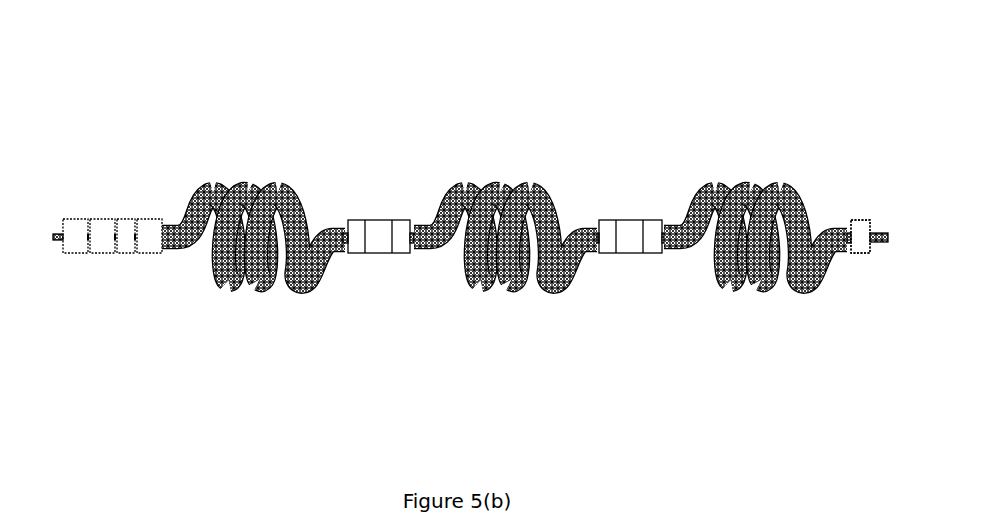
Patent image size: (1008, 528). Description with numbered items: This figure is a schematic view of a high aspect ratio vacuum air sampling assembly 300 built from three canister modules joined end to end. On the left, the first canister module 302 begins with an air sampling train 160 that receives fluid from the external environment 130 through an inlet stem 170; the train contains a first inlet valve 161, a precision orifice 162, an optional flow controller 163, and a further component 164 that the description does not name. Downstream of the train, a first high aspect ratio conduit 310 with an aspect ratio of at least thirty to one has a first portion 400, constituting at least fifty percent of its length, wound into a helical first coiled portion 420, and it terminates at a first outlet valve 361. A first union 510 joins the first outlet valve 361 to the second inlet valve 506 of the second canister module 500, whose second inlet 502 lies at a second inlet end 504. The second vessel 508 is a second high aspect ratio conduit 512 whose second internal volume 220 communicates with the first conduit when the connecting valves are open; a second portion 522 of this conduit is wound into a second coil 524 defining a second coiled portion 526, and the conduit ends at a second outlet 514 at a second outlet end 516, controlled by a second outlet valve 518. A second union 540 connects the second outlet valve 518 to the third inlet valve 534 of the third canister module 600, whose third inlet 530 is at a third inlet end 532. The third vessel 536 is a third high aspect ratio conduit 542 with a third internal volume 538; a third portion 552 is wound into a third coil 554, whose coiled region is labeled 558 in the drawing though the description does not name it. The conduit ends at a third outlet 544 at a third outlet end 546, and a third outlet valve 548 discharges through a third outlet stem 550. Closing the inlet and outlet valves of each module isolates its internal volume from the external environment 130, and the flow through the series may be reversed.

The high aspect ratio vacuum air sampling assembly 300 is at (85, 35).
The inlet stem 170 is at (56, 233).
The air sampling train 160 is at (162, 259).
The precision orifice 162 is at (77, 219).
The flow controller 163 is at (95, 219).
The first inlet valve 161 is at (123, 219).
The connector segment 164 is at (143, 219).
The first high aspect ratio conduit 310 is at (218, 240).
The first portion 400 is at (310, 150).
The first coiled portion 420 is at (183, 150).
The first canister module 302 is at (58, 358).
The external environment 130 is at (442, 124).
The first outlet valve 361 is at (360, 220).
The first union 510 is at (373, 220).
The second inlet valve 506 is at (405, 220).
The second inlet end 504 is at (439, 214).
The second inlet 502 is at (413, 253).
The second internal volume 220 is at (512, 271).
The second high aspect ratio conduit 512 is at (467, 271).
The second vessel 508 is at (501, 268).
The second coil 524 is at (552, 271).
The second portion 522 is at (512, 240).
The second coiled portion 526 is at (512, 240).
The second canister module 500 is at (402, 358).
The second outlet end 516 is at (598, 230).
The second outlet valve 518 is at (600, 220).
The second union 540 is at (623, 220).
The third inlet valve 534 is at (648, 220).
The second outlet 514 is at (602, 253).
The third inlet 530 is at (665, 253).
The third inlet end 532 is at (689, 215).
The third internal volume 538 is at (703, 247).
The third high aspect ratio conduit 542 is at (713, 273).
The third vessel 536 is at (752, 268).
The third coil 554 is at (803, 273).
The third portion 552 is at (759, 243).
The coil turns 558 is at (759, 243).
The third outlet end 546 is at (848, 231).
The third outlet valve 548 is at (858, 220).
The third outlet 544 is at (855, 253).
The third outlet stem 550 is at (875, 233).
The third canister module 600 is at (650, 358).